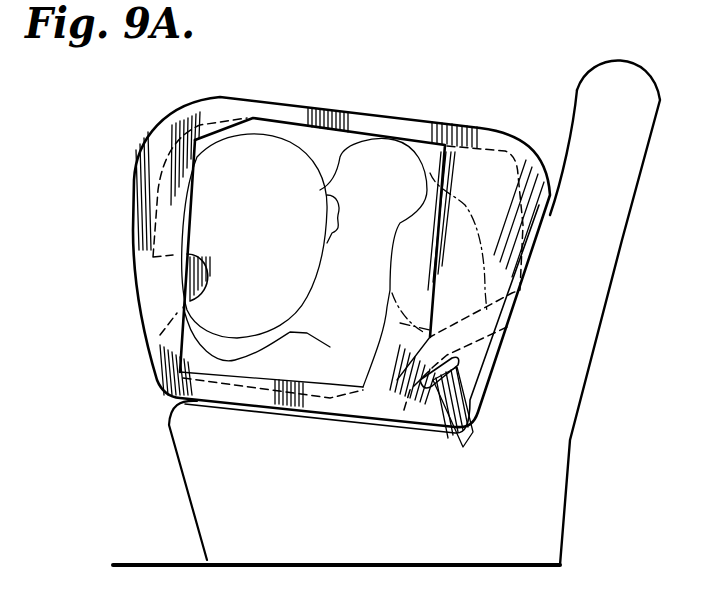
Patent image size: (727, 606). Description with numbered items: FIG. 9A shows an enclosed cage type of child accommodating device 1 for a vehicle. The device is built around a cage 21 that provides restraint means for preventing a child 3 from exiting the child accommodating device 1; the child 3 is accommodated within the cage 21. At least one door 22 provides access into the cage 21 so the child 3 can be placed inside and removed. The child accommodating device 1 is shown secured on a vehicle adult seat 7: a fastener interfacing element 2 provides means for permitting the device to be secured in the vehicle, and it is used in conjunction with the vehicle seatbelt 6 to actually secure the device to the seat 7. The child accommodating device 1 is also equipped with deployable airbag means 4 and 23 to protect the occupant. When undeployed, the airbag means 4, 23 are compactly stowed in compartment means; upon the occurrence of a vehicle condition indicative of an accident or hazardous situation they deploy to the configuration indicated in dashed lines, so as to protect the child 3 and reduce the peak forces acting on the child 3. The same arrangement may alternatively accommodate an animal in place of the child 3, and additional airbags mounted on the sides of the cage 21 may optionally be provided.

The child accomodating device 1 is at (150, 355).
The fastener interfacing element 2 is at (470, 365).
The child 3 is at (391, 148).
The deployable airbag means 4 is at (222, 214).
The seatbelt 6 is at (477, 418).
The vehicle adult seat 7 is at (568, 489).
The cage 21 is at (283, 98).
The door 22 is at (185, 306).
The deployable airbag means 23 is at (423, 250).